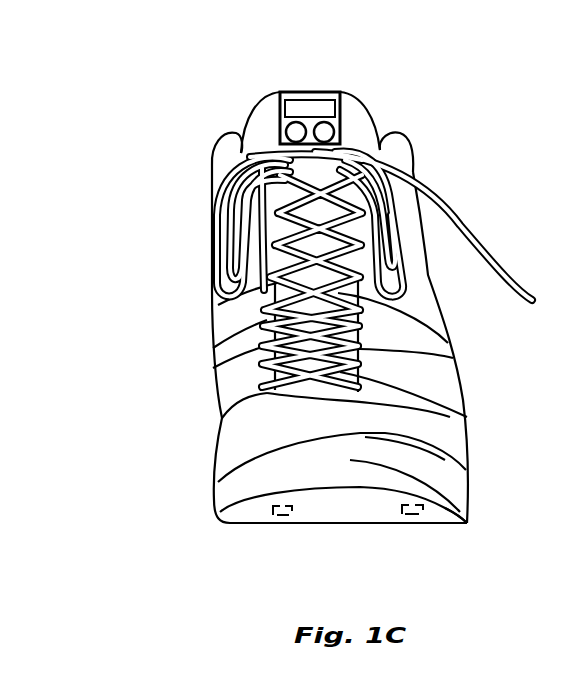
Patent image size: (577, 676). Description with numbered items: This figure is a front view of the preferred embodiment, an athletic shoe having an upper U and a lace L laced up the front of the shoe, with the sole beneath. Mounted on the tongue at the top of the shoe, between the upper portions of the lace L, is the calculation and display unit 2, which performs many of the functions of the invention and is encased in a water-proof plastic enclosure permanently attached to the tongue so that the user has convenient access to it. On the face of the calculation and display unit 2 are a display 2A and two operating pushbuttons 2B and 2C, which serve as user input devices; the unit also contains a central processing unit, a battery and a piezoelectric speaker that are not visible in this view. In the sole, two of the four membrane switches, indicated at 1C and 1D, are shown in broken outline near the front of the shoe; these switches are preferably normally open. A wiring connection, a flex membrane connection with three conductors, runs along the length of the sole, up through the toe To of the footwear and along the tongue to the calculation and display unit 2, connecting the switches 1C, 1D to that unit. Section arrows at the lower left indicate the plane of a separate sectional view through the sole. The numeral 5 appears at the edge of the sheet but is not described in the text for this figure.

The calculation and display unit 2 is at (330, 92).
The display 2A is at (300, 98).
The operating pushbutton 2B is at (280, 125).
The operating pushbutton 2C is at (340, 115).
The lace L is at (447, 207).
The upper U is at (443, 343).
The toe To is at (467, 512).
The membrane switch 1C is at (425, 508).
The membrane switch 1D is at (292, 507).
The sensor unit 5 is at (4, 370).